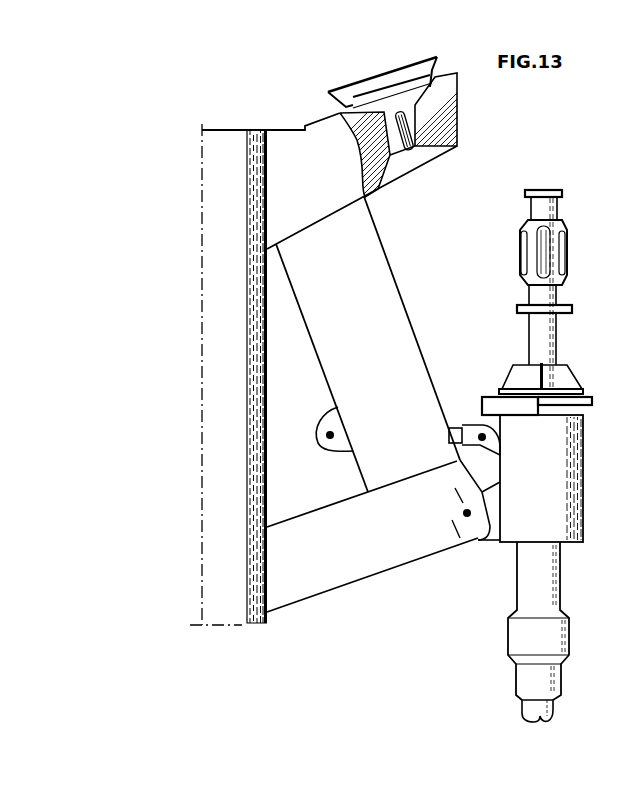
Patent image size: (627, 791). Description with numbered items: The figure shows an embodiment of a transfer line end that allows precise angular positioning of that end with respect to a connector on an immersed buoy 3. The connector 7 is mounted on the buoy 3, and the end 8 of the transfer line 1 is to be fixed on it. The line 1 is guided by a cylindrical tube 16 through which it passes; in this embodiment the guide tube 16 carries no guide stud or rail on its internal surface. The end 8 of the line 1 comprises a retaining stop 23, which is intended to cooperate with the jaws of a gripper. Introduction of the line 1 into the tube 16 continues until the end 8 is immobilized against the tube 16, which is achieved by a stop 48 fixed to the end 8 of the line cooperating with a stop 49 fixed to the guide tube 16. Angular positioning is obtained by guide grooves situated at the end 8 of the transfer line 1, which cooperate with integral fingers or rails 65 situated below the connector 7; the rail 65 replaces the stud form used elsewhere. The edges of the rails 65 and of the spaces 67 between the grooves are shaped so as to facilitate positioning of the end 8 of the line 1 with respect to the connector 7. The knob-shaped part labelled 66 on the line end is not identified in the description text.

The transfer line 1 is at (557, 707).
The immersed buoy 3 is at (232, 616).
The connector 7 is at (311, 96).
The end of the transfer line 8 is at (582, 184).
The cylindrical tube 16 is at (578, 473).
The retaining stop 23 is at (517, 306).
The stop 48 is at (522, 371).
The stop 49 is at (592, 405).
The rail 65 is at (427, 143).
The knob 66 is at (553, 235).
The spaces between the grooves 67 is at (560, 286).